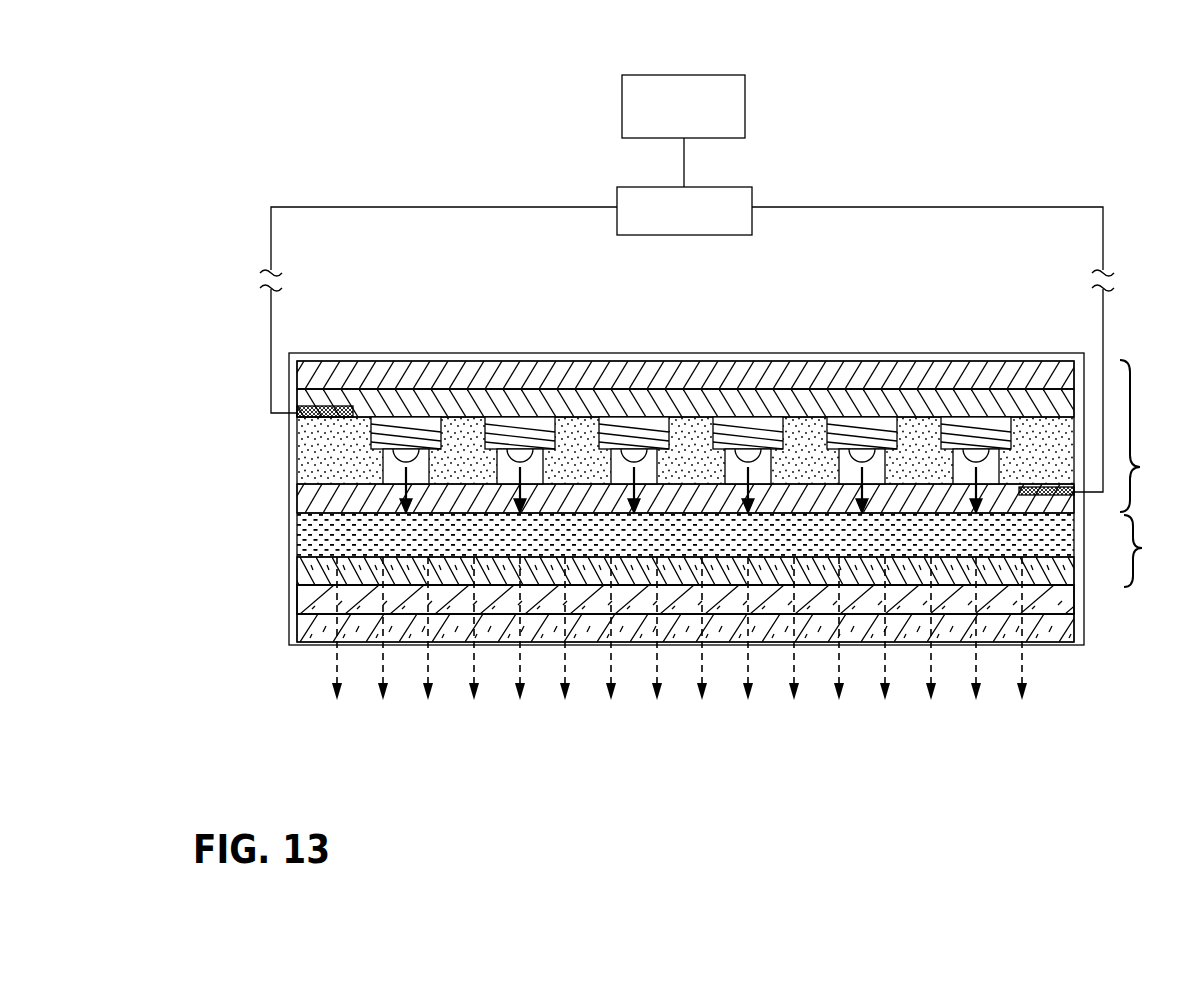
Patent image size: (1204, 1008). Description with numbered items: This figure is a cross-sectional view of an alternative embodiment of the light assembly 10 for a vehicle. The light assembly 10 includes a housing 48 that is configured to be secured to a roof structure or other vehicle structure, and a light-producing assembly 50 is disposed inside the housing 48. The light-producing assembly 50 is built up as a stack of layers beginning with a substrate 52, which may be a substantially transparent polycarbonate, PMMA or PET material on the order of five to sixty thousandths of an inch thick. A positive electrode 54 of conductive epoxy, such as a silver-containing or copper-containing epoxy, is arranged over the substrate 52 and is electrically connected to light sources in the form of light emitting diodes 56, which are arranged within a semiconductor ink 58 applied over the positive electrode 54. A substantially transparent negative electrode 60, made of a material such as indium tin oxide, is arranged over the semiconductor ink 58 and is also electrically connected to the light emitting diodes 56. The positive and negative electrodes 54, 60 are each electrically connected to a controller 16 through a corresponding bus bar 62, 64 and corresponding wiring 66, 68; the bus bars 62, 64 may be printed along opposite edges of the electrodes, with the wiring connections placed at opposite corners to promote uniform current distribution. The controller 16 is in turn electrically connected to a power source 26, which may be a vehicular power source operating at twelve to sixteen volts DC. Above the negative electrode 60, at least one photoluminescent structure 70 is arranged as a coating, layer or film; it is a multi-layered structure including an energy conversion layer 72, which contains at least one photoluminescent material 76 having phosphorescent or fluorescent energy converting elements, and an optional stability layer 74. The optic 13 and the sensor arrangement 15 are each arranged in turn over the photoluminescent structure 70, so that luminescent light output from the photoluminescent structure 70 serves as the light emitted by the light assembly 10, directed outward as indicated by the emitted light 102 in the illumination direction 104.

The light assembly 10 is at (1010, 146).
The power source 26 is at (622, 121).
The controller 16 is at (617, 196).
The wiring 66 is at (271, 318).
The wiring 68 is at (1103, 323).
The housing 48 is at (1085, 585).
The light-producing assembly 50 is at (1145, 436).
The substrate 52 is at (297, 372).
The positive electrode 54 is at (303, 401).
The bus bar 62 is at (329, 405).
The semiconductor ink 58 is at (318, 447).
The light emitting diodes 56 is at (505, 435).
The negative electrode 60 is at (305, 498).
The bus bar 64 is at (1060, 496).
The photoluminescent structure 70 is at (1152, 551).
The photoluminescent material 76 is at (320, 530).
The energy conversion layer 72 is at (297, 548).
The stability layer 74 is at (297, 575).
The optic 13 is at (1065, 603).
The sensor arrangement 15 is at (1057, 633).
The emitted light 102 is at (700, 670).
The illumination direction 104 is at (308, 716).